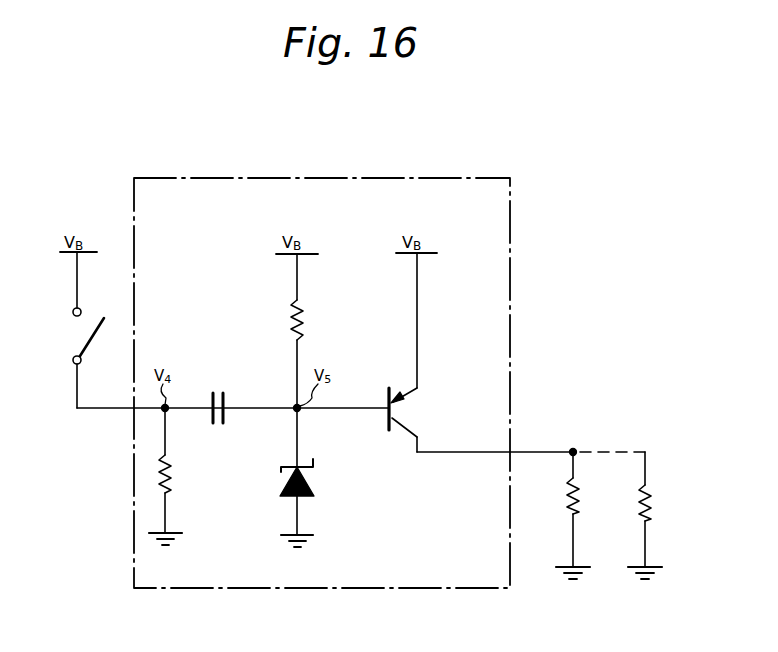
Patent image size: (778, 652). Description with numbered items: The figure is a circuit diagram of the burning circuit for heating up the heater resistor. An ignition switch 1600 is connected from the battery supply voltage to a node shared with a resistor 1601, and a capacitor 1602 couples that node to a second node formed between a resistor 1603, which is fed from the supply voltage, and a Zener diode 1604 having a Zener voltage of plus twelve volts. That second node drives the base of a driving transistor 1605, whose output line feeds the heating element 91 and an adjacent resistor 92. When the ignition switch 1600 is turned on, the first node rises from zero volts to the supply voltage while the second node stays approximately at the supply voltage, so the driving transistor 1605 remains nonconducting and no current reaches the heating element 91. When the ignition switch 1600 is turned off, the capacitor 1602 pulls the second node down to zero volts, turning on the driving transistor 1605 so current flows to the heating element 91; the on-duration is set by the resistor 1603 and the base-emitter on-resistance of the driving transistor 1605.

The ignition switch 1600 is at (83, 346).
The resistor 1601 is at (170, 480).
The capacitor 1602 is at (218, 390).
The resistor 1603 is at (301, 318).
The Zener diode 1604 is at (312, 486).
The driving transistor 1605 is at (400, 416).
The heating element 91 is at (569, 489).
The resistor 92 is at (641, 492).